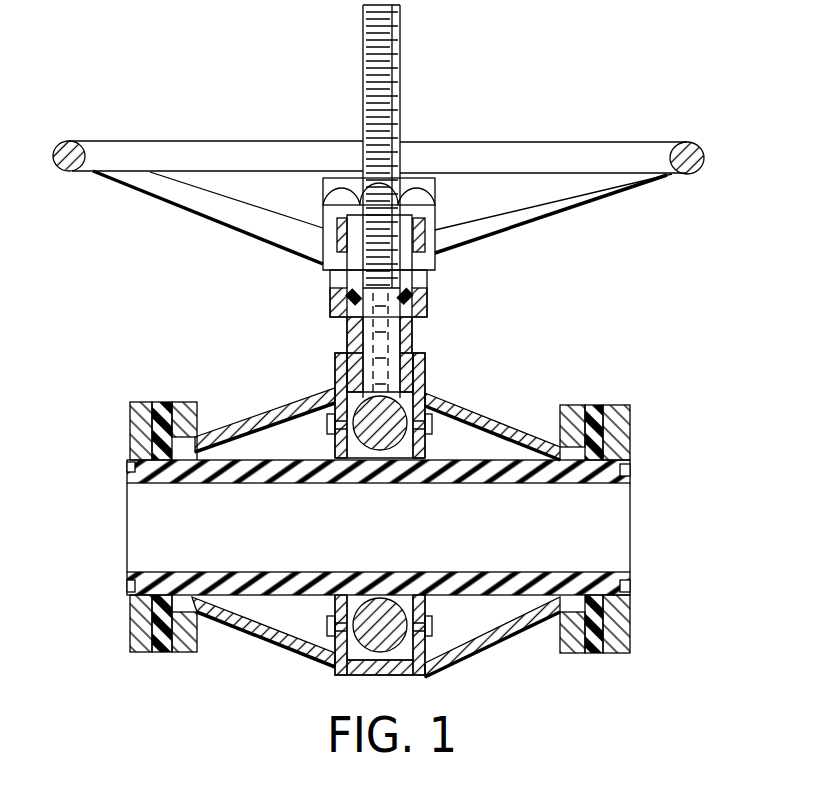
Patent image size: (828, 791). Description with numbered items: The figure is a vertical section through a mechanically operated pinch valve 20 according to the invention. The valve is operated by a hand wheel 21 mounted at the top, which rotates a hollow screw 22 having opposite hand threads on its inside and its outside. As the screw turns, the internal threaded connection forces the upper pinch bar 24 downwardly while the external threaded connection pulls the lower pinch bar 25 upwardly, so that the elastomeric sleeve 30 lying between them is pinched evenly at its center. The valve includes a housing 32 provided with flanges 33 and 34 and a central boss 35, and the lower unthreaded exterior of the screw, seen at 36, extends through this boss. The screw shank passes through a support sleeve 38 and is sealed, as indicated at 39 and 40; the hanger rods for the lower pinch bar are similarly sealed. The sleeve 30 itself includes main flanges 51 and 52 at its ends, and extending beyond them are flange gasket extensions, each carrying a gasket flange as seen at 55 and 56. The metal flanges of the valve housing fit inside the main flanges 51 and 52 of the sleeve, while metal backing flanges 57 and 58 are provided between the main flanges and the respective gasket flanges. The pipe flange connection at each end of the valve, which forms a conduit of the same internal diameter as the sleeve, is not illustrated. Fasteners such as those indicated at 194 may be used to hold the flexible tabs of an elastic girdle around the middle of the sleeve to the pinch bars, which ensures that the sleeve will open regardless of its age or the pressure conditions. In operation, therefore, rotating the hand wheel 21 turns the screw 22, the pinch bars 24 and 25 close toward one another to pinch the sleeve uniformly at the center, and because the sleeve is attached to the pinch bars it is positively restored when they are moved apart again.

The valve 20 is at (543, 312).
The hand wheel 21 is at (627, 133).
The hollow screw 22 is at (400, 113).
The upper pinch bar 24 is at (420, 397).
The lower pinch bar 25 is at (383, 637).
The elastomeric sleeve 30 is at (640, 512).
The housing 32 is at (498, 423).
The flange 33 is at (213, 385).
The flange 34 is at (560, 432).
The central boss 35 is at (333, 382).
The lower unthreaded exterior of the screw 36 is at (418, 332).
The support sleeve 38 is at (345, 335).
The seal 39 is at (355, 292).
The seal 40 is at (425, 357).
The main flange 51 is at (162, 402).
The main flange 52 is at (598, 406).
The gasket flange 55 is at (127, 466).
The gasket flange 56 is at (633, 478).
The metal backing flange 57 is at (130, 440).
The metal backing flange 58 is at (632, 442).
The fastener 194 is at (447, 628).